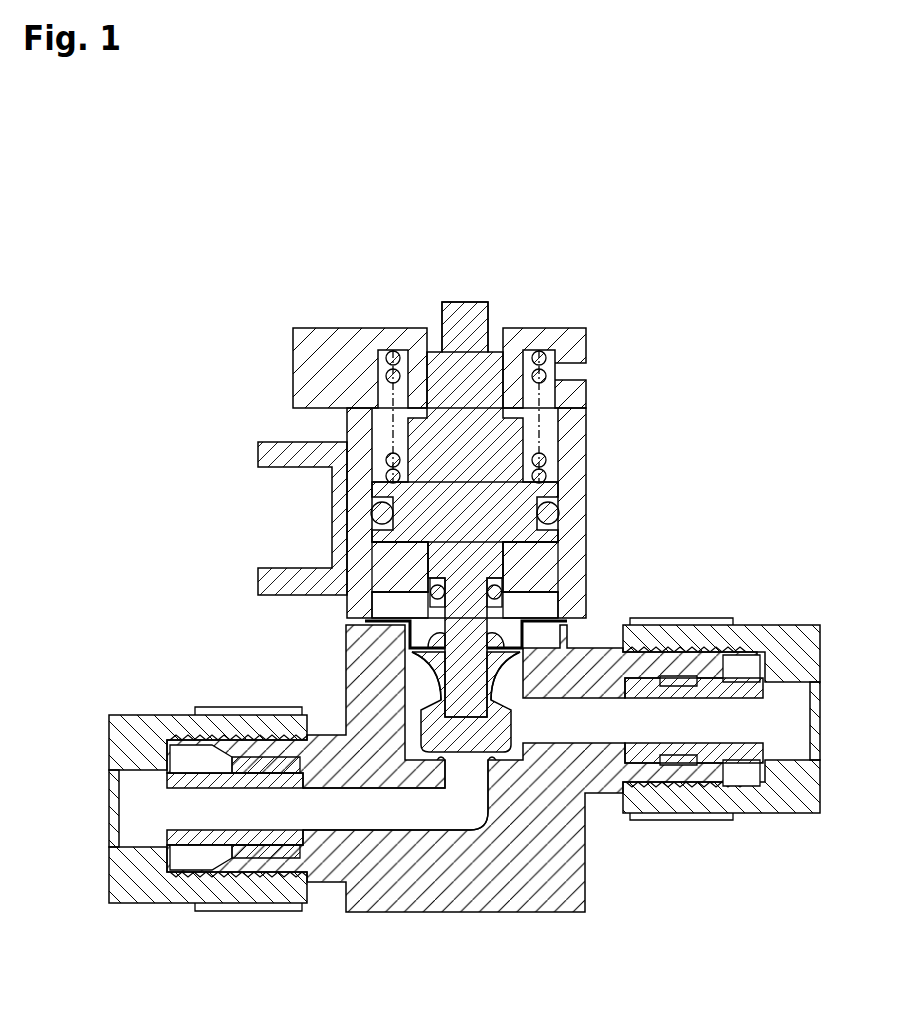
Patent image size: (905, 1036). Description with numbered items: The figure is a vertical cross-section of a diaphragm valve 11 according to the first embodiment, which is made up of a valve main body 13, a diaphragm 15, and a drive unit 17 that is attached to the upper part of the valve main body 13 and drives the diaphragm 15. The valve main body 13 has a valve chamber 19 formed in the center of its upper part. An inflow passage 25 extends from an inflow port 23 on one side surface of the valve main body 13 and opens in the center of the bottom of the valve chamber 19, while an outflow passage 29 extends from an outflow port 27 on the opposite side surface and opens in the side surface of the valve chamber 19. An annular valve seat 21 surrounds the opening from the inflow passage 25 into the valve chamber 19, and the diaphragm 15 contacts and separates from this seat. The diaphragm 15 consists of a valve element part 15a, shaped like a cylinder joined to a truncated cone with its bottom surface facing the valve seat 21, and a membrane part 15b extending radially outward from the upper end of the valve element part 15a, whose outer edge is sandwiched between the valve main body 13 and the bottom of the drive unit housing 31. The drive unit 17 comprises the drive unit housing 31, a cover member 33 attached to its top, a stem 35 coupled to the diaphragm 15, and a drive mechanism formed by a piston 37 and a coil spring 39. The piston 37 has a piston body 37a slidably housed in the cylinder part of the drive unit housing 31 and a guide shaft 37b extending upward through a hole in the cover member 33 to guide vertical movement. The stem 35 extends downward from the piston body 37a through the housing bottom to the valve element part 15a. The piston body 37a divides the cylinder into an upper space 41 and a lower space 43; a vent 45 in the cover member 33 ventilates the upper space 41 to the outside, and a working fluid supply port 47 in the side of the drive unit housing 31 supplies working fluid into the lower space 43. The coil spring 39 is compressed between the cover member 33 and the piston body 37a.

The diaphragm valve 11 is at (630, 256).
The valve main body 13 is at (565, 870).
The diaphragm 15 is at (256, 648).
The valve element part 15a is at (430, 686).
The membrane part 15b is at (420, 656).
The drive unit 17 is at (588, 343).
The valve chamber 19 is at (522, 665).
The annular valve seat 21 is at (510, 758).
The inflow port 23 is at (172, 805).
The inflow passage 25 is at (378, 822).
The outflow port 27 is at (768, 722).
The outflow passage 29 is at (710, 742).
The drive unit housing 31 is at (586, 527).
The cover member 33 is at (293, 365).
The stem 35 is at (395, 583).
The piston 37 is at (510, 470).
The piston body 37a is at (505, 498).
The guide shaft 37b is at (468, 316).
The coil spring 39 is at (547, 460).
The upper space 41 is at (378, 430).
The lower space 43 is at (553, 562).
The vent 45 is at (580, 372).
The working fluid supply port 47 is at (278, 522).